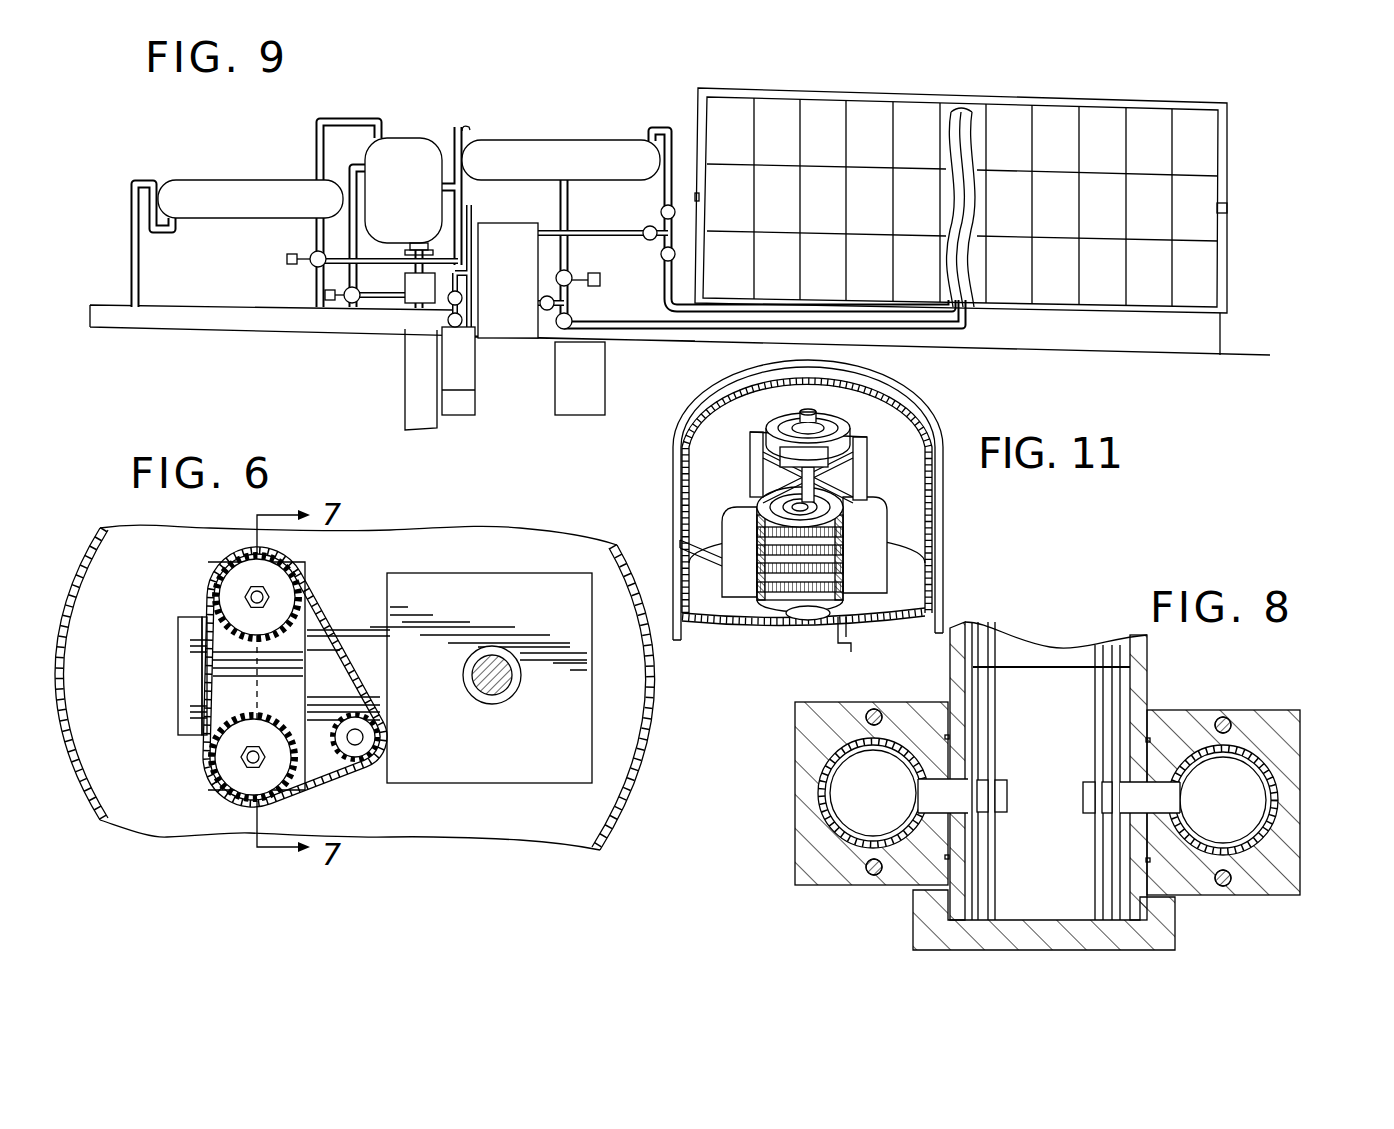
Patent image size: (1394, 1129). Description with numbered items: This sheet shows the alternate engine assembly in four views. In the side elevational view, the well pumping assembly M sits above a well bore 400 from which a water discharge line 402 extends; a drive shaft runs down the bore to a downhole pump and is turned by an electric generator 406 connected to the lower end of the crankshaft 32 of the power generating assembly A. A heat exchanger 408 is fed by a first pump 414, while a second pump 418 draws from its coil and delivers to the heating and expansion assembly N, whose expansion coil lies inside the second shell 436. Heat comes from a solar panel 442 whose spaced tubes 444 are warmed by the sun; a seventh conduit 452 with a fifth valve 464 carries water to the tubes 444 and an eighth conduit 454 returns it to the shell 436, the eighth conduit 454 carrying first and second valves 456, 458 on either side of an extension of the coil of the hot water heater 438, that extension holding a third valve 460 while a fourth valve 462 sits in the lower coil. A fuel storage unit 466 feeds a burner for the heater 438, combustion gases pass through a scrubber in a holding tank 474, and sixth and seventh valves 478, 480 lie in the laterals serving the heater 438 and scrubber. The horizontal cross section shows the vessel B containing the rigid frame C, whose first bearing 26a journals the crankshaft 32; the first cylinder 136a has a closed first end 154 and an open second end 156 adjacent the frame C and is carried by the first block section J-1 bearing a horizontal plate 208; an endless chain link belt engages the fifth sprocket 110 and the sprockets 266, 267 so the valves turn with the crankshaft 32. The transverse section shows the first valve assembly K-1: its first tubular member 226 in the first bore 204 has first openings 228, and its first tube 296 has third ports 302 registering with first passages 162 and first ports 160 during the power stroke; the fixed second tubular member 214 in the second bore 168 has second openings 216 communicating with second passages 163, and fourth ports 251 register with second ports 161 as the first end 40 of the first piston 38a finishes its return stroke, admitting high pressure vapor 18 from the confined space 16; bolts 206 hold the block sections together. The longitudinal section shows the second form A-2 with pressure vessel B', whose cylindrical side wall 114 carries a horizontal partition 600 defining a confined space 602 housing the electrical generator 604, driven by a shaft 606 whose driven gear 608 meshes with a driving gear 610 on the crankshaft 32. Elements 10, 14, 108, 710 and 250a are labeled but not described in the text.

In FIG. 9, the water discharge line 402 is at (213, 325).
In FIG. 9, the well bore 400 is at (405, 400).
In FIG. 9, the heat exchanger 408 is at (283, 172).
In FIG. 9, the tank 10 is at (428, 140).
In FIG. 9, the power generating device A is at (402, 133).
In FIG. 9, the well pumping assembly M is at (253, 162).
In FIG. 9, the heating and expansion assembly N is at (547, 140).
In FIG. 9, the second confined space defining shell 436 is at (515, 140).
In FIG. 9, the hot water heater 438 is at (523, 212).
In FIG. 9, the electric generator 406 is at (405, 293).
In FIG. 9, the holding tank 474 is at (477, 402).
In FIG. 9, the fuel storage unit 466 is at (555, 275).
In FIG. 9, the second pump 418 is at (313, 252).
In FIG. 9, the first pump 414 is at (347, 290).
In FIG. 9, the second valve 458 is at (660, 212).
In FIG. 9, the first valve 456 is at (646, 267).
In FIG. 9, the third valve 460 is at (650, 240).
In FIG. 9, the fifth valve 464 is at (571, 316).
In FIG. 9, the fourth valve 462 is at (540, 303).
In FIG. 9, the seventh valve 480 is at (462, 297).
In FIG. 9, the sixth valve 478 is at (462, 320).
In FIG. 9, the seventh conduit 452 is at (648, 333).
In FIG. 9, the eighth conduit 454 is at (710, 315).
In FIG. 9, the solar panel 442 is at (1043, 98).
In FIG. 9, the spaced tubes 444 is at (1002, 123).
In FIG. 6, the vessel shell 14 is at (657, 685).
In FIG. 6, the pressure vessel B is at (637, 697).
In FIG. 6, the first block section J-1 is at (307, 570).
In FIG. 8, the first block section J-1 is at (843, 702).
In FIG. 6, the closed first end 154 is at (183, 735).
In FIG. 8, the closed first end 154 is at (913, 928).
In FIG. 6, the first cylinder 136a is at (352, 630).
In FIG. 8, the first cylinder 136a is at (1147, 682).
In FIG. 6, the sprocket 266 is at (270, 567).
In FIG. 6, the sprocket 267 is at (272, 712).
In FIG. 6, the small gear 108 is at (362, 752).
In FIG. 6, the fifth sprocket 110 is at (378, 733).
In FIG. 6, the second open end 156 is at (380, 630).
In FIG. 6, the rigid frame C is at (540, 612).
In FIG. 6, the crankshaft 32 is at (480, 680).
In FIG. 11, the crankshaft 32 is at (836, 640).
In FIG. 6, the first bearing 26a is at (503, 698).
In FIG. 6, the high pressure vapor 18 is at (433, 818).
In FIG. 8, the high pressure vapor 18 is at (1063, 888).
In FIG. 6, the horizontal plate 208 is at (463, 772).
In FIG. 6, the confined space 16 is at (567, 823).
In FIG. 11, the second form of the engine A-2 is at (940, 423).
In FIG. 11, the inner shell 710 is at (890, 383).
In FIG. 11, the pressure vessel B' is at (838, 549).
In FIG. 11, the horizontal partition 600 is at (706, 633).
In FIG. 11, the confined space 602 is at (738, 474).
In FIG. 11, the driven gear 608 is at (793, 618).
In FIG. 11, the shaft 606 is at (832, 458).
In FIG. 11, the electrical generator 604 is at (857, 490).
In FIG. 11, the driving gear 610 is at (845, 622).
In FIG. 11, the cylindrical side wall 114 is at (940, 627).
In FIG. 8, the second tubular member 214 is at (795, 760).
In FIG. 8, the first tubular member 226 is at (1273, 767).
In FIG. 8, the first valve assembly K-1 is at (818, 795).
In FIG. 8, the second bore 168 is at (825, 812).
In FIG. 8, the first openings 228 is at (1178, 808).
In FIG. 8, the bolts 206 is at (880, 713).
In FIG. 8, the first bore 204 is at (1275, 825).
In FIG. 8, the first piston 38a is at (1048, 771).
In FIG. 8, the first end 40 is at (1042, 668).
In FIG. 8, the first passages 162 is at (947, 787).
In FIG. 8, the second passages 163 is at (1140, 787).
In FIG. 8, the first ports 160 is at (1007, 793).
In FIG. 8, the second ports 161 is at (1092, 815).
In FIG. 8, the second openings 216 is at (970, 828).
In FIG. 8, the bearing 250a is at (845, 757).
In FIG. 8, the fourth ports 251 is at (845, 830).
In FIG. 8, the first tube 296 is at (1220, 750).
In FIG. 8, the third ports 302 is at (1177, 792).